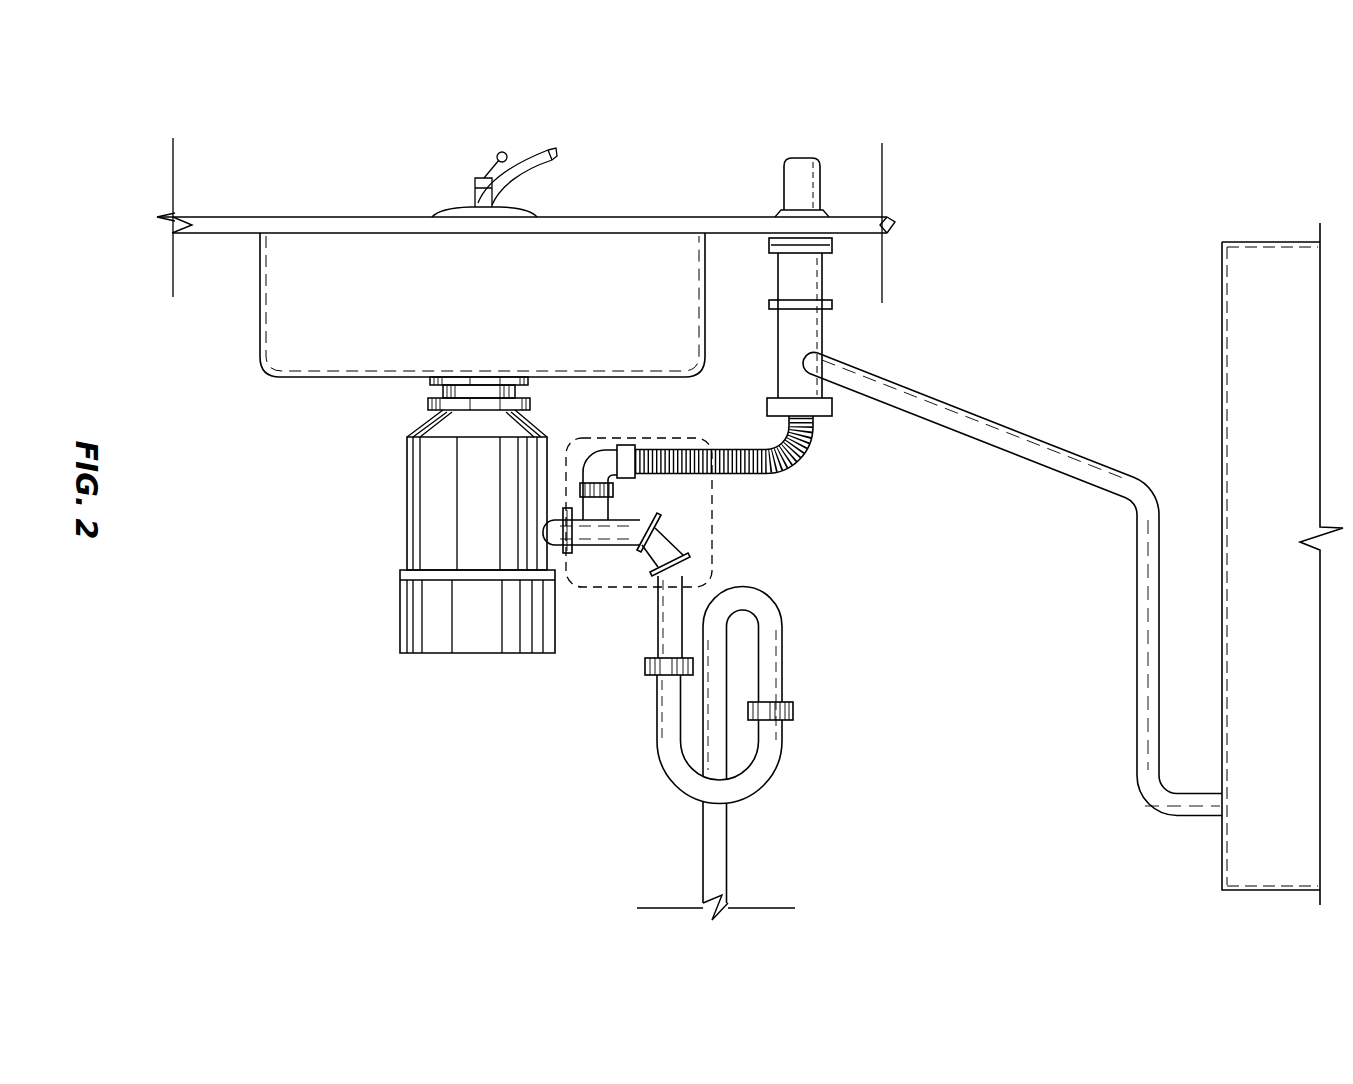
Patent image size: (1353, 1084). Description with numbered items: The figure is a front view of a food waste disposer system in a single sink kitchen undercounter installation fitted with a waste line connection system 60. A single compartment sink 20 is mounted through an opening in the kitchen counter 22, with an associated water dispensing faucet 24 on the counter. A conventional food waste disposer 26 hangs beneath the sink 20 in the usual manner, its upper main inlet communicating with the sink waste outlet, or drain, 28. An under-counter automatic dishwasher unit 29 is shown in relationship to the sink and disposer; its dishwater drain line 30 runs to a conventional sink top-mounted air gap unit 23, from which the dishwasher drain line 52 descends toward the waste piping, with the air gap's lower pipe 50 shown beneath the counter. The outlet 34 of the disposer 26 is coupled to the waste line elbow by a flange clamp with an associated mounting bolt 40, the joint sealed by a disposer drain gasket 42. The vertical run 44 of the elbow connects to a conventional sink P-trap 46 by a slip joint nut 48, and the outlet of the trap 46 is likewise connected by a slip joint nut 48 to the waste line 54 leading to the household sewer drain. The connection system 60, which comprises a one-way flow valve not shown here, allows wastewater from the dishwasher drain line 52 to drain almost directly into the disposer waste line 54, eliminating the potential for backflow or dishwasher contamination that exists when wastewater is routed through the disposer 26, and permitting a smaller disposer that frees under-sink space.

The single compartment sink 20 is at (282, 357).
The kitchen counter 22 is at (279, 218).
The air gap unit 23 is at (801, 158).
The water dispensing faucet 24 is at (538, 150).
The food waste disposer 26 is at (400, 488).
The sink waste outlet 28 is at (486, 375).
The under-counter automatic dishwasher unit 29 is at (1245, 292).
The dishwater drain line 30 is at (1133, 502).
The outlet 34 is at (565, 490).
The mounting bolt 40 is at (574, 556).
The disposer drain gasket 42 is at (566, 562).
The vertical run 44 is at (662, 628).
The P-trap 46 is at (755, 803).
The slip joint nut 48 is at (651, 675).
The air gap drain pipe 50 is at (815, 327).
The dishwasher drain line 52 is at (803, 451).
The waste line 54 is at (768, 661).
The waste line connection system 60 is at (712, 539).